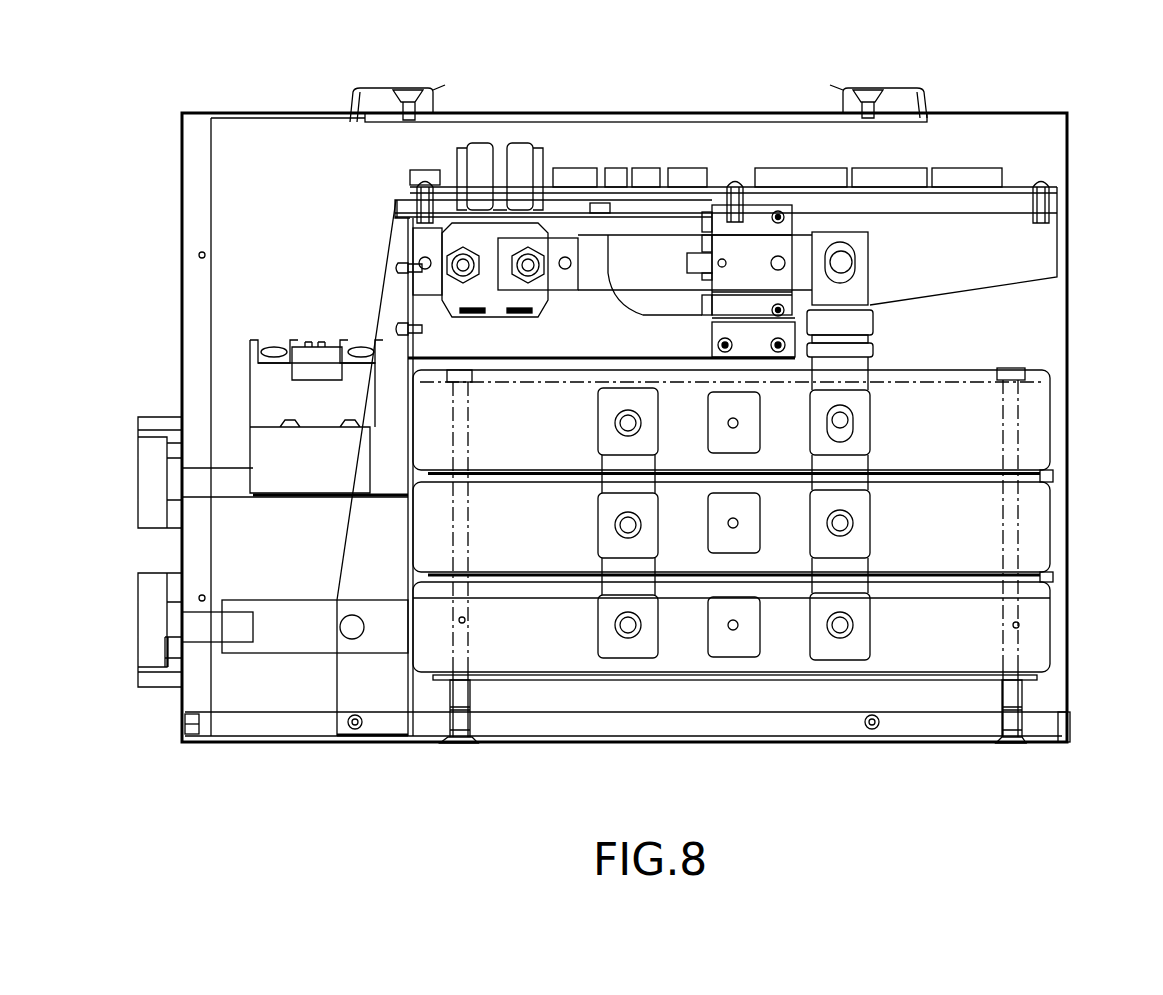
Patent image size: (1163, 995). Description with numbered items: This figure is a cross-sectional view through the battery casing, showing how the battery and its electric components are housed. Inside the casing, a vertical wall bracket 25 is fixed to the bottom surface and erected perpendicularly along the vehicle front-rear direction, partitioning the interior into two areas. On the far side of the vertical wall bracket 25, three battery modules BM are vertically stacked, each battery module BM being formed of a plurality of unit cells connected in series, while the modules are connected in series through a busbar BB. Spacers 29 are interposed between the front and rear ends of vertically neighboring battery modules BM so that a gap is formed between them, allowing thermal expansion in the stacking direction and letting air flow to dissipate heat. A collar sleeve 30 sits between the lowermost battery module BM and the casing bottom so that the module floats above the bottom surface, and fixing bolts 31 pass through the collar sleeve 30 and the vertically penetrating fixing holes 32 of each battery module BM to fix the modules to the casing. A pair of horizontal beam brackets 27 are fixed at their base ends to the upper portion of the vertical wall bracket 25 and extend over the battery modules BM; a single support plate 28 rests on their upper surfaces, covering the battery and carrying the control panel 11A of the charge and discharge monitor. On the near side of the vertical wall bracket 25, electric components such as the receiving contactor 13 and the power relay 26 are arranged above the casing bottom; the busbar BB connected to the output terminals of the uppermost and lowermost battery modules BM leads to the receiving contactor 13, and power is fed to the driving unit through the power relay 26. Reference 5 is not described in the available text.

The battery case (BC) 5 is at (965, 112).
The control panel 11A is at (645, 180).
The receiving contactor 13 is at (153, 420).
The vertical wall bracket 25 is at (388, 347).
The power relay 26 is at (297, 400).
The horizontal beam bracket 27 is at (927, 250).
The support plate 28 is at (713, 190).
The spacer 29 is at (663, 478).
The collar sleeve 30 is at (472, 688).
The fixing bolt 31 is at (1012, 360).
The fixing hole 32 is at (462, 620).
The busbar BB is at (292, 615).
The battery module BM is at (977, 463).